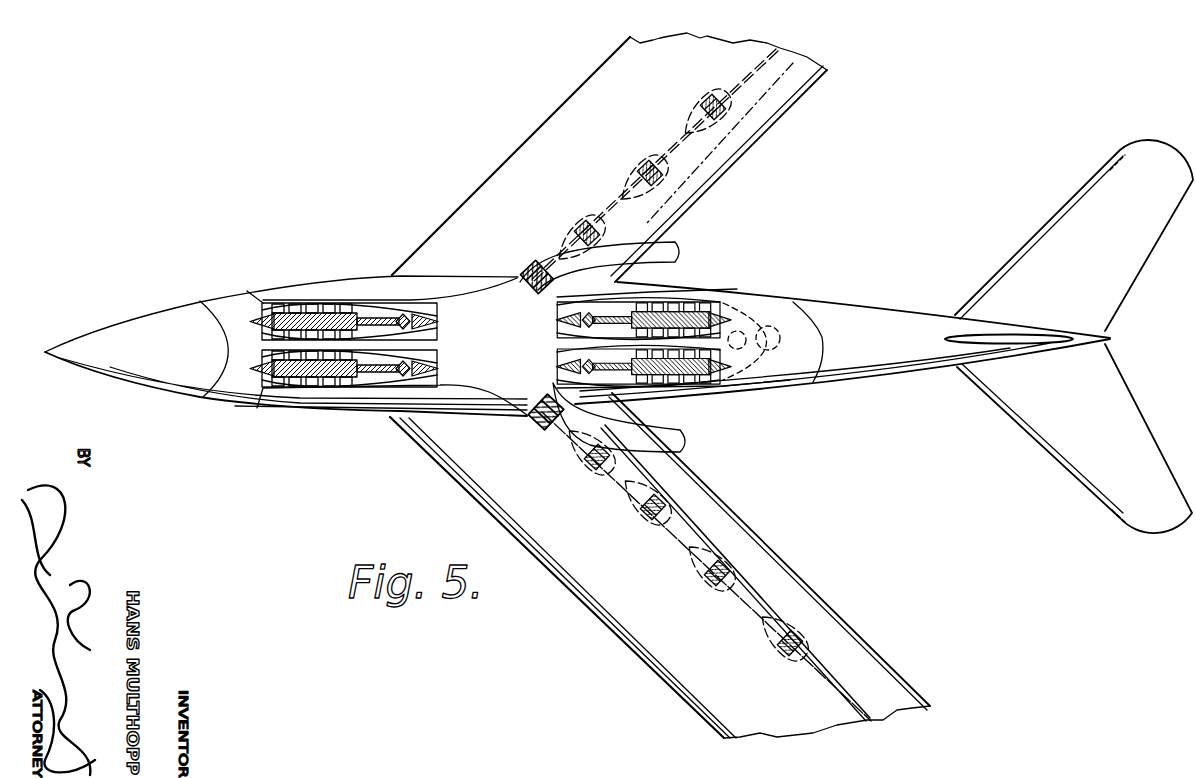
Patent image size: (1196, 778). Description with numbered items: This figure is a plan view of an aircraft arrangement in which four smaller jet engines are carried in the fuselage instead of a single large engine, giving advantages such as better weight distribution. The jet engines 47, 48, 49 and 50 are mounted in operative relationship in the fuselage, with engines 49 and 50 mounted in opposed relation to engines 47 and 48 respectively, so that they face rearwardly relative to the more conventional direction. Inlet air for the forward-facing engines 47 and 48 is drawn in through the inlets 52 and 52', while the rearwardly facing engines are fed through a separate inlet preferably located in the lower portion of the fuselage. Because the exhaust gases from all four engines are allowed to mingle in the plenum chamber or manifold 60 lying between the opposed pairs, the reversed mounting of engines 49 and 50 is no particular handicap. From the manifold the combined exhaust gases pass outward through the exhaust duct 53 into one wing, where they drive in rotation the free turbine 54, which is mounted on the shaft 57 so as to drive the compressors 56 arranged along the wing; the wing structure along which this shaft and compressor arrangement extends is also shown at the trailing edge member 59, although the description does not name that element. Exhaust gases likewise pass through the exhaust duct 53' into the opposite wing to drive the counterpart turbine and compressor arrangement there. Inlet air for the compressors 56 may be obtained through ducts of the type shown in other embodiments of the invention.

The jet engine 47 is at (320, 390).
The jet engine 48 is at (327, 304).
The jet engine 49 is at (727, 390).
The jet engine 50 is at (722, 293).
The inlet 52 is at (370, 366).
The inlet 52' is at (286, 339).
The exhaust duct 53 is at (638, 420).
The exhaust duct 53' is at (622, 263).
The free turbine 54 is at (546, 428).
The compressors 56 is at (767, 567).
The shaft 57 is at (890, 722).
The wing rear spar 59 is at (826, 648).
The plenum chamber or manifold 60 is at (505, 332).